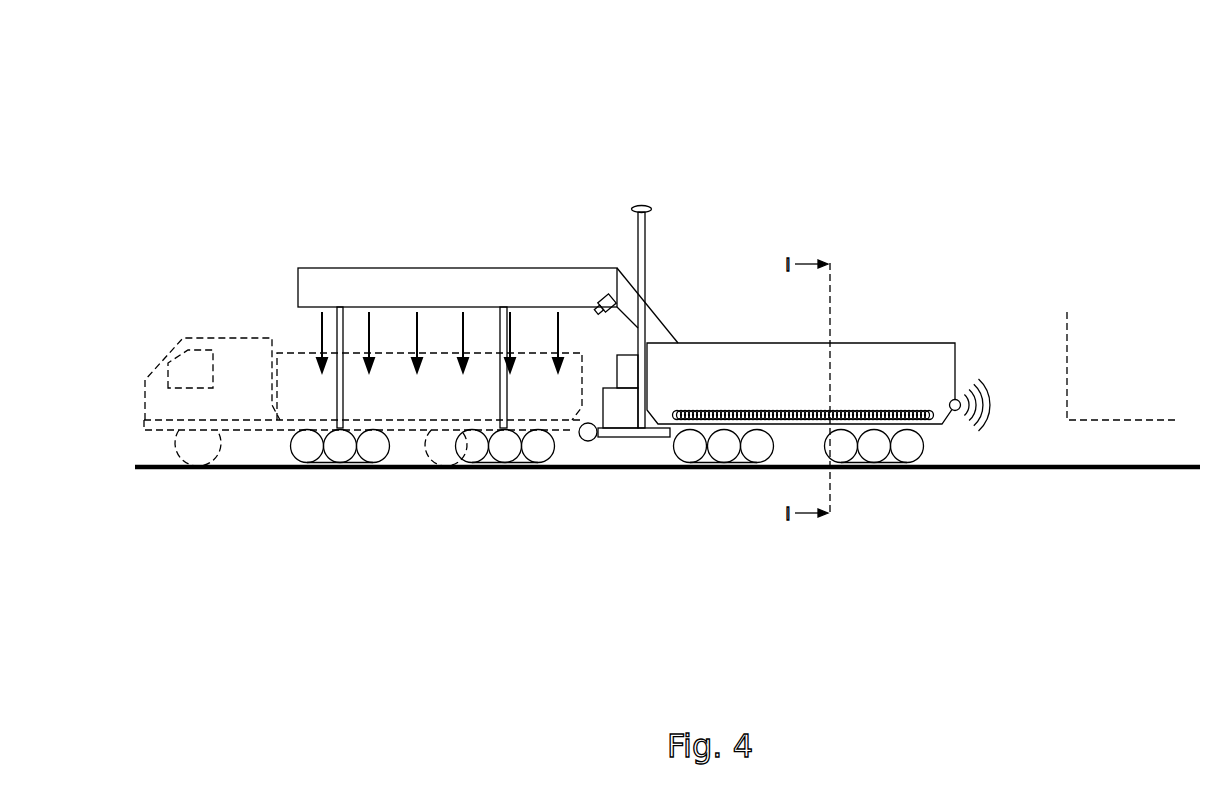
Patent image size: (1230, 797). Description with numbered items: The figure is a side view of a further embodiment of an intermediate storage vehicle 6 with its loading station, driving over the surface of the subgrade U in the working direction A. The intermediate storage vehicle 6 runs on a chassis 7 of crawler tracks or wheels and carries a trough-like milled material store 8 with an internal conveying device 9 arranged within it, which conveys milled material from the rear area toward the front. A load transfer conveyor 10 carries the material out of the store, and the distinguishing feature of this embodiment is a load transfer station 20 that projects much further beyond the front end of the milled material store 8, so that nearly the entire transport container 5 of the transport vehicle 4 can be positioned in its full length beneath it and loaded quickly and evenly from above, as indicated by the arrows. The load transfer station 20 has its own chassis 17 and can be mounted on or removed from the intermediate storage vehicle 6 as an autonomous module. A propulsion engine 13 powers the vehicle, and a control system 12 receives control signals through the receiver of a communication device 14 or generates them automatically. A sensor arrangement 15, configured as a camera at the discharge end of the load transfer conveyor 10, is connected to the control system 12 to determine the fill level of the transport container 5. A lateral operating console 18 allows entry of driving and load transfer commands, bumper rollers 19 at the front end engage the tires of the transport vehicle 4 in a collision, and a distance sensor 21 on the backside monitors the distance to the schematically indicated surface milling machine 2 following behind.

The surface milling machine 2 is at (1121, 366).
The transport vehicle 4 is at (168, 416).
The transport container 5 is at (418, 393).
The intermediate storage vehicle 6 is at (794, 75).
The chassis 7 is at (875, 444).
The milled material store 8 is at (936, 372).
The internal conveying device 9 is at (868, 417).
The load transfer conveyor 10 is at (543, 278).
The control system 12 is at (627, 372).
The propulsion engine 13 is at (623, 415).
The communication device 14 is at (642, 283).
The sensor arrangement 15 is at (605, 294).
The chassis of the load transfer station 17 is at (307, 447).
The lateral operating console 18 is at (338, 332).
The bumper roller 19 is at (587, 437).
The load transfer station 20 is at (345, 236).
The distance sensor 21 is at (957, 412).
The working direction A is at (188, 485).
The subgrade U is at (1010, 468).